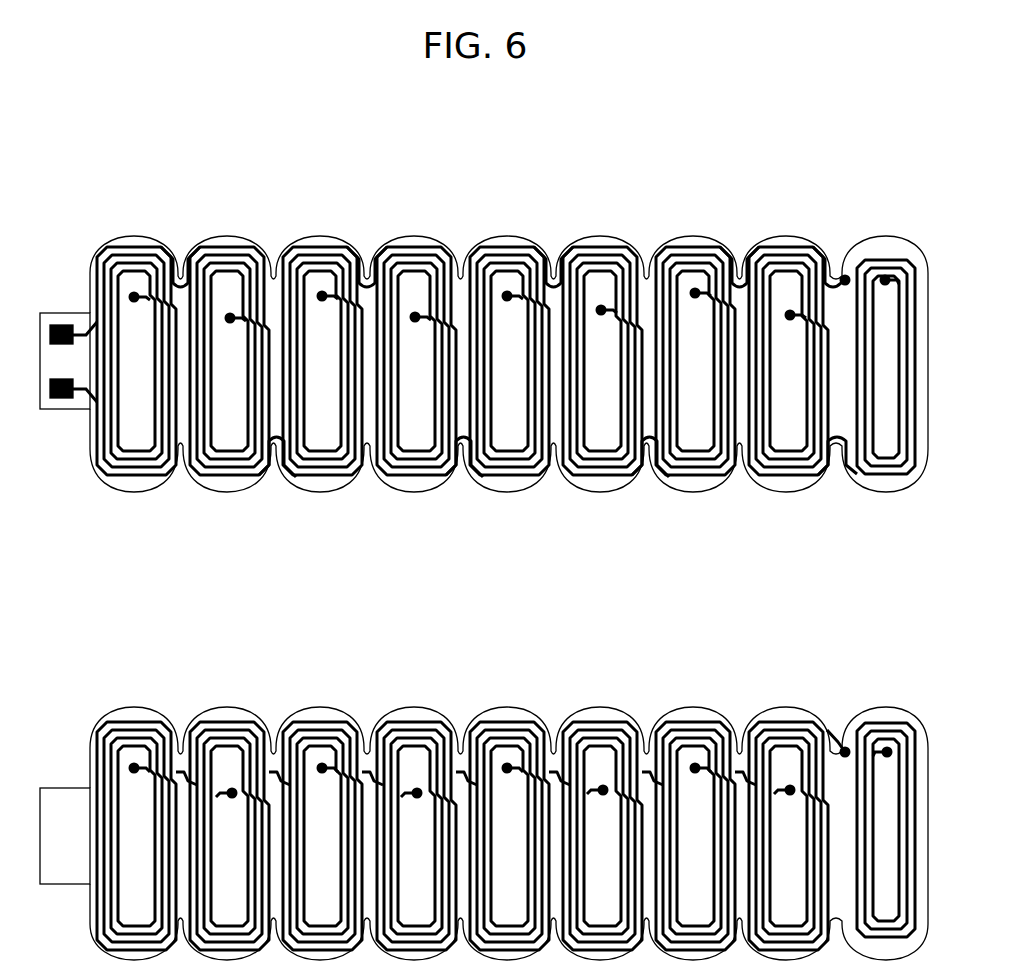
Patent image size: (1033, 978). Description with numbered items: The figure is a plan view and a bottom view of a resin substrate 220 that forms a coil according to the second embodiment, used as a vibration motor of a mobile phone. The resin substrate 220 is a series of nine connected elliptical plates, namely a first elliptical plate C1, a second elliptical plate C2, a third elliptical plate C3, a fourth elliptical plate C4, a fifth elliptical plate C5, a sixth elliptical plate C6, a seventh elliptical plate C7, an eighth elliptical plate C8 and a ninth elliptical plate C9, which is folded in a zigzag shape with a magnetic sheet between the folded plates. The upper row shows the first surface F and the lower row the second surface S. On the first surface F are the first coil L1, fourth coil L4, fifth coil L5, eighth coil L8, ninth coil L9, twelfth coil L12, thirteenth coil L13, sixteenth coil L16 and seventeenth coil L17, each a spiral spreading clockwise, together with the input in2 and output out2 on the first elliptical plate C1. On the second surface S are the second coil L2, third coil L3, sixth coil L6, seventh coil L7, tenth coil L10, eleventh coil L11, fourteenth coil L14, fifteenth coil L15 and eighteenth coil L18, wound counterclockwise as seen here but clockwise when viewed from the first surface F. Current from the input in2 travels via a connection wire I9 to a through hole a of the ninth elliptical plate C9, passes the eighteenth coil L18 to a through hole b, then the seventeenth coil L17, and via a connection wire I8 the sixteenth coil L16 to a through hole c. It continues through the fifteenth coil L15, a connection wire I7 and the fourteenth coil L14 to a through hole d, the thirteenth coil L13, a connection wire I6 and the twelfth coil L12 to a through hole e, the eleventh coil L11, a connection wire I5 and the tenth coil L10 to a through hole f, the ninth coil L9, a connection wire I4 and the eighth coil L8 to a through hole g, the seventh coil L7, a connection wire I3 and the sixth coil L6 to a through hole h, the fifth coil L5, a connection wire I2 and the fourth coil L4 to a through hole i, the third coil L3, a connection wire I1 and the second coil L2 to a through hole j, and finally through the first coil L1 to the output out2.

The resin substrate 220 is at (360, 218).
The first surface F is at (97, 252).
The second surface S is at (97, 730).
The input in2 is at (60, 324).
The output out2 is at (56, 399).
The first elliptical plate C1 is at (134, 238).
The second elliptical plate C2 is at (227, 238).
The third elliptical plate C3 is at (320, 238).
The fourth elliptical plate C4 is at (414, 238).
The fifth elliptical plate C5 is at (507, 238).
The sixth elliptical plate C6 is at (600, 238).
The seventh elliptical plate C7 is at (693, 238).
The eighth elliptical plate C8 is at (786, 238).
The ninth elliptical plate C9 is at (884, 238).
The first coil L1 is at (136, 361).
The second coil L2 is at (136, 836).
The third coil L3 is at (229, 836).
The fourth coil L4 is at (229, 361).
The fifth coil L5 is at (322, 361).
The sixth coil L6 is at (322, 836).
The seventh coil L7 is at (416, 836).
The eighth coil L8 is at (416, 361).
The ninth coil L9 is at (509, 361).
The tenth coil L10 is at (509, 836).
The eleventh coil L11 is at (602, 836).
The twelfth coil L12 is at (602, 361).
The thirteenth coil L13 is at (695, 361).
The fourteenth coil L14 is at (695, 836).
The fifteenth coil L15 is at (788, 836).
The sixteenth coil L16 is at (788, 361).
The seventeenth coil L17 is at (886, 367).
The eighteenth coil L18 is at (886, 830).
The connection wire I1 is at (181, 776).
The connection wire I2 is at (276, 474).
The connection wire I3 is at (368, 776).
The connection wire I4 is at (468, 476).
The connection wire I5 is at (554, 776).
The connection wire I6 is at (656, 476).
The connection wire I7 is at (741, 776).
The connection wire I8 is at (846, 476).
The connection wire I9 is at (802, 244).
The through hole a is at (845, 528).
The through hole b is at (886, 528).
The through hole c is at (790, 565).
The through hole d is at (700, 543).
The through hole e is at (602, 562).
The through hole f is at (513, 544).
The through hole g is at (416, 566).
The through hole h is at (327, 544).
The through hole i is at (231, 568).
The through hole j is at (140, 546).